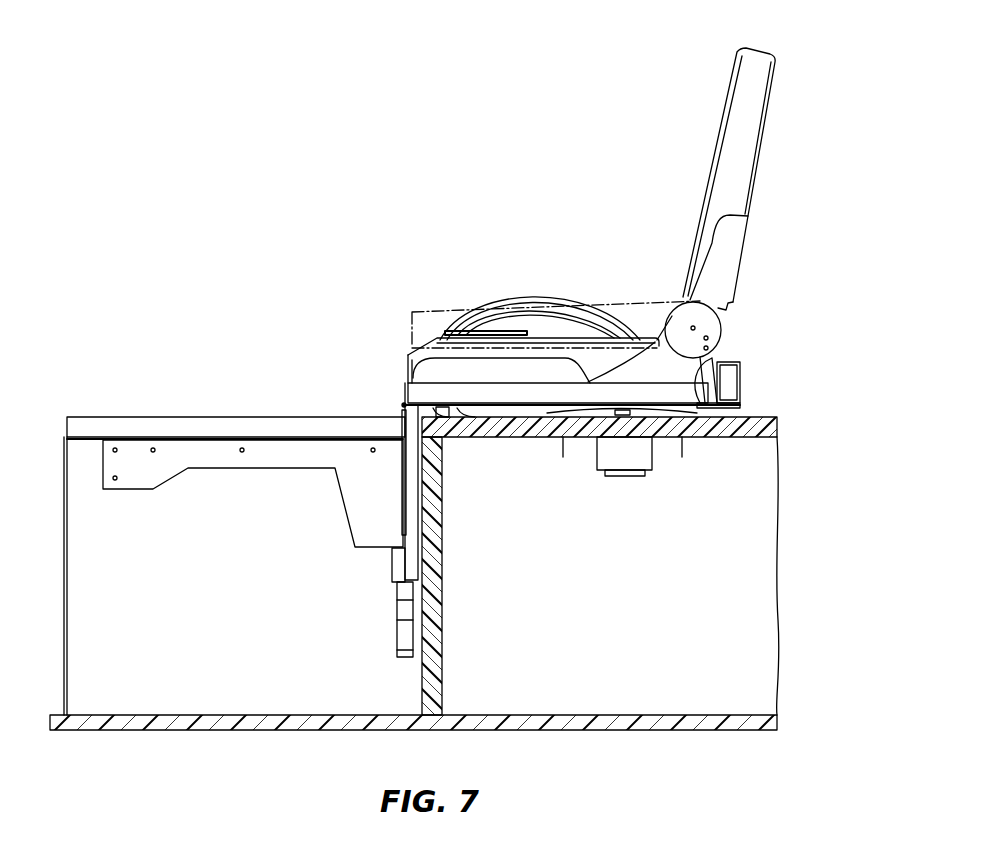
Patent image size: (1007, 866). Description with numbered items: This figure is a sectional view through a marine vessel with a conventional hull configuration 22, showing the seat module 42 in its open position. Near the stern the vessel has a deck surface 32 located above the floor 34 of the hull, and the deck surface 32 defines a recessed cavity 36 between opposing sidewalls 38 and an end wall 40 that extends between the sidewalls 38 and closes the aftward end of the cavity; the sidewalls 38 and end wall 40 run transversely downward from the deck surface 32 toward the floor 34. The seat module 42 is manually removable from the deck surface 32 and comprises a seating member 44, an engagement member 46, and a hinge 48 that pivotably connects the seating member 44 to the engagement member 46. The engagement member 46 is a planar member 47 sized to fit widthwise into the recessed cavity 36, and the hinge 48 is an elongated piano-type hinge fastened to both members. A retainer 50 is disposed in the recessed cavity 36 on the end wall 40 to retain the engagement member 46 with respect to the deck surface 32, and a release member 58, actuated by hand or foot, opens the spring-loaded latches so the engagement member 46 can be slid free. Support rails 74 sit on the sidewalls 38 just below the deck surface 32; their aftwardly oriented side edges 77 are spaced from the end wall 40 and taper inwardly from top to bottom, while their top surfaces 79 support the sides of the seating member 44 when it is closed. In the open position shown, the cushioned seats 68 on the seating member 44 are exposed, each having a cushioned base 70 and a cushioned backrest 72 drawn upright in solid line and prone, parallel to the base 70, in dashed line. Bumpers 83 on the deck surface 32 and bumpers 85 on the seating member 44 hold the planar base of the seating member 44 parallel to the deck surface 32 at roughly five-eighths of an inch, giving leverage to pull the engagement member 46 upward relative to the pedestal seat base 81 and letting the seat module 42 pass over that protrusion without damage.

The hull configuration 22 is at (665, 731).
The deck surface 32 is at (765, 420).
The floor 34 is at (540, 712).
The recessed cavity 36 is at (204, 545).
The sidewalls 38 is at (217, 638).
The end wall 40 is at (420, 686).
The seat module 42 is at (798, 75).
The seating member 44 is at (712, 380).
The engagement member 46 is at (408, 500).
The planar member 47 is at (413, 470).
The hinge 48 is at (403, 405).
The retainer 50 is at (375, 599).
The release member 58 is at (404, 630).
The cushioned seats 68 is at (760, 214).
The cushioned base 70 is at (636, 335).
The cushioned backrest 72 is at (716, 137).
The support rails 74 is at (215, 455).
The side edges 77 is at (400, 483).
The top surfaces 79 is at (262, 437).
The pedestal seat base 81 is at (643, 412).
The bumpers 83 is at (715, 410).
The bumpers 85 is at (449, 410).